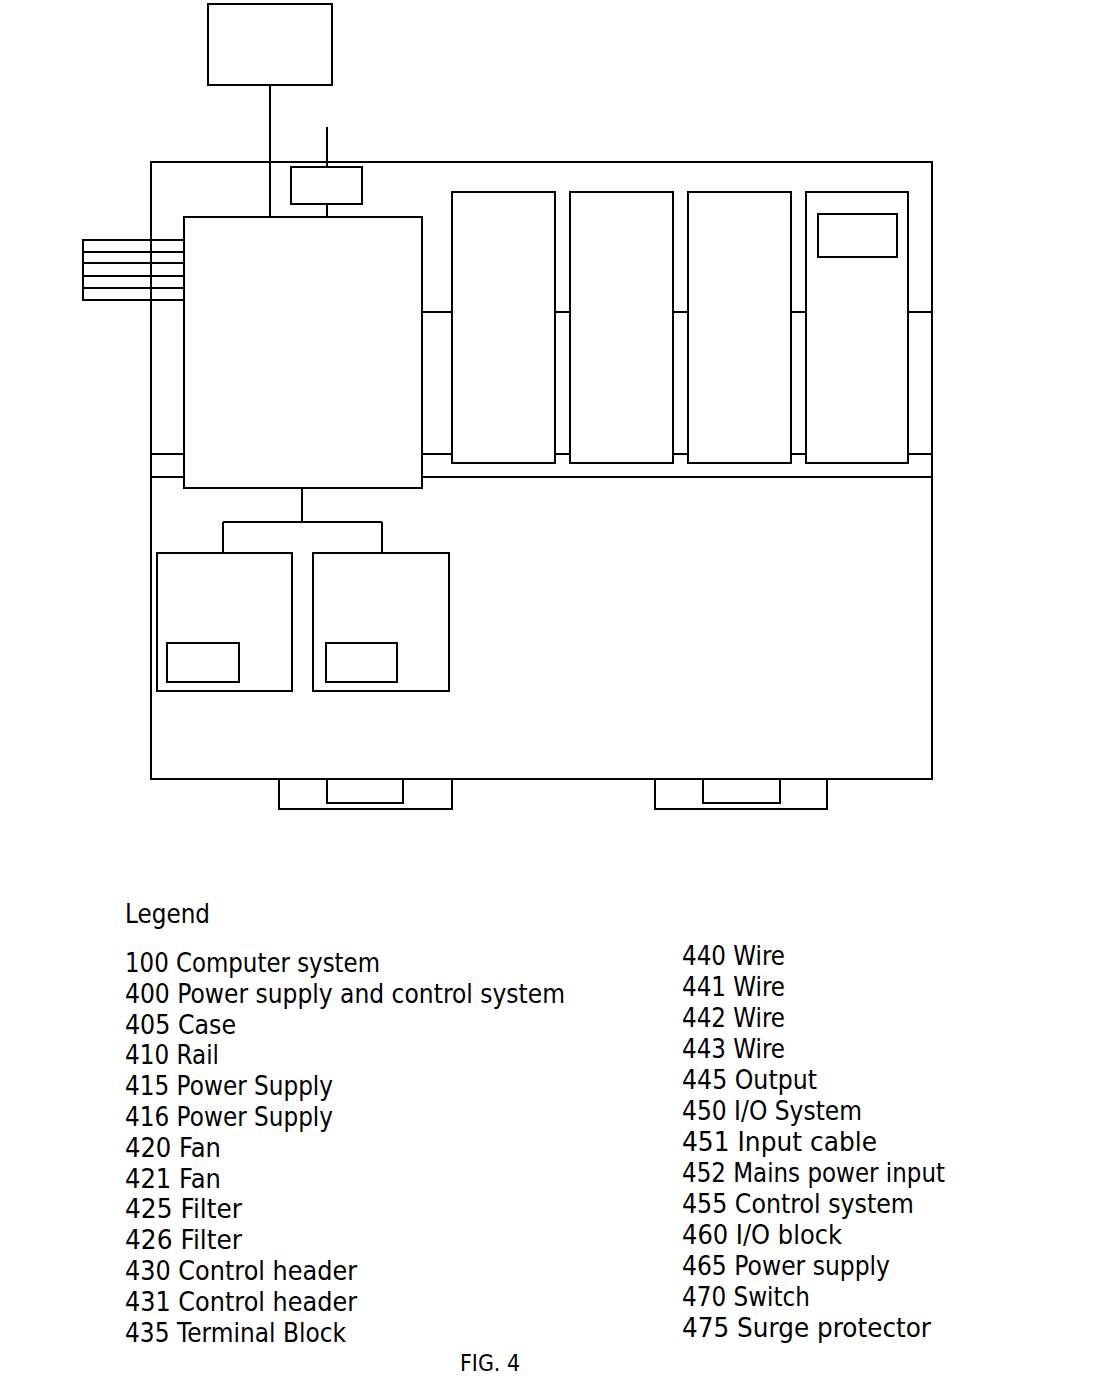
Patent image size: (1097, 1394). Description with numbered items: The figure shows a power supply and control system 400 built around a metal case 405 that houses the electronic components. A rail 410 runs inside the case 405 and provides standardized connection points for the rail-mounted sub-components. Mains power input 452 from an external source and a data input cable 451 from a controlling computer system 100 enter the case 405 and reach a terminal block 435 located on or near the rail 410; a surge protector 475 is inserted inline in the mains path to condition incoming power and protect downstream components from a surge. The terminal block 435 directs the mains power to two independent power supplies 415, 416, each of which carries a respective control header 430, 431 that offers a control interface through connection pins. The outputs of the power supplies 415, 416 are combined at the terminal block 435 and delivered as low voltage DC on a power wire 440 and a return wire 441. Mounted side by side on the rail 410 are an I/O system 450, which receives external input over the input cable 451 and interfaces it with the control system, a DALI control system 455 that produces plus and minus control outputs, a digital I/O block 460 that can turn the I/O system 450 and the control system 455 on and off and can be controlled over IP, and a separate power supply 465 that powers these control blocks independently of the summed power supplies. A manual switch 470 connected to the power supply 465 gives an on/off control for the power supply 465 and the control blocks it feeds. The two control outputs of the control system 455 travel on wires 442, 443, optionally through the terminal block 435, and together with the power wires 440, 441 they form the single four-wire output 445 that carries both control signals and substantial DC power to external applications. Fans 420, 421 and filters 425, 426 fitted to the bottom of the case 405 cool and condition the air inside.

The computer system 100 is at (291, 58).
The power supply and control system 400 is at (845, 30).
The case 405 is at (604, 162).
The rail 410 is at (157, 465).
The power supply 415 is at (246, 620).
The power supply 416 is at (404, 620).
The fan 420 is at (279, 790).
The fan 421 is at (655, 790).
The filter 425 is at (360, 805).
The filter 426 is at (738, 805).
The control header 430 is at (225, 676).
The control header 431 is at (383, 676).
The terminal block 435 is at (324, 363).
The wire 440 is at (146, 277).
The wire 441 is at (98, 290).
The wire 442 is at (157, 263).
The wire 443 is at (135, 250).
The output 445 is at (100, 240).
The I/O system 450 is at (525, 342).
The input cable 451 is at (272, 125).
The mains power input 452 is at (331, 143).
The control system 455 is at (643, 342).
The I/O block 460 is at (760, 342).
The power supply 465 is at (878, 342).
The switch 470 is at (879, 250).
The surge protector 475 is at (348, 199).